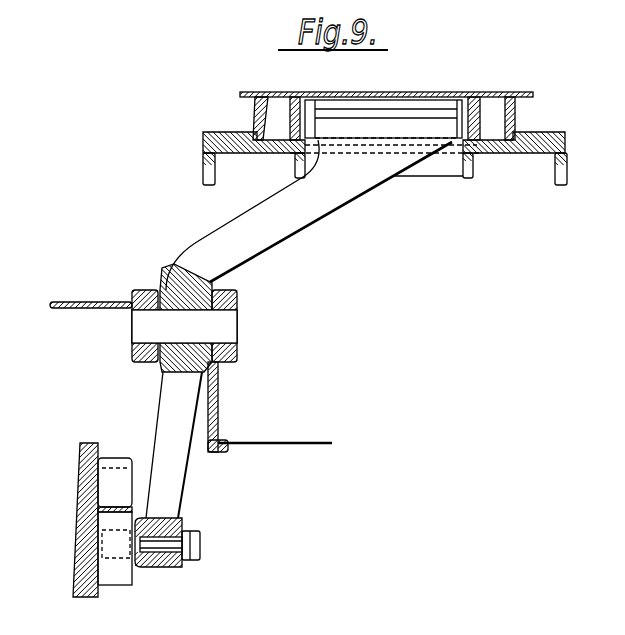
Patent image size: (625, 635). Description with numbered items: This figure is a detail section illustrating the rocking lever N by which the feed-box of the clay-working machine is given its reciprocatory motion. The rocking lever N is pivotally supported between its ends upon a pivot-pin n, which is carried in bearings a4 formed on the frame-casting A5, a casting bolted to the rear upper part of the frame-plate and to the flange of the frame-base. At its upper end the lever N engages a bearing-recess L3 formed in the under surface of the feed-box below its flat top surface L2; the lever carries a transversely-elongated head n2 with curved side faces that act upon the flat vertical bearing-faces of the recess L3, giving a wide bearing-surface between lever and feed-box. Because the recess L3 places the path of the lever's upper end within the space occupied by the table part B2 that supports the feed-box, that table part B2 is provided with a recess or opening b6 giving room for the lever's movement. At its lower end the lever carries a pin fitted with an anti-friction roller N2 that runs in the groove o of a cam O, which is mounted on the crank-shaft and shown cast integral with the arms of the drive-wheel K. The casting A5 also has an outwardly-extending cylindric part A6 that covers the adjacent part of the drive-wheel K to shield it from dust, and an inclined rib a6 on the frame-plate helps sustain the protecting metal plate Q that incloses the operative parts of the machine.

The flat top surface L2 is at (412, 93).
The bearing-recess L3 is at (346, 84).
The transversely-elongated head n2 is at (68, 544).
The recess or opening b6 is at (448, 147).
The table part B2 is at (517, 157).
The rocking lever N is at (304, 329).
The pivot-pin n is at (184, 318).
The bearings a4 is at (150, 293).
The outwardly-extending cylindric part A6 is at (98, 288).
The frame-casting A5 is at (219, 392).
The inclined rib a6 is at (220, 453).
The metal plate Q is at (327, 441).
The drive-wheel K is at (70, 520).
The cam O is at (115, 485).
The groove o is at (118, 466).
The boss N2 is at (178, 568).